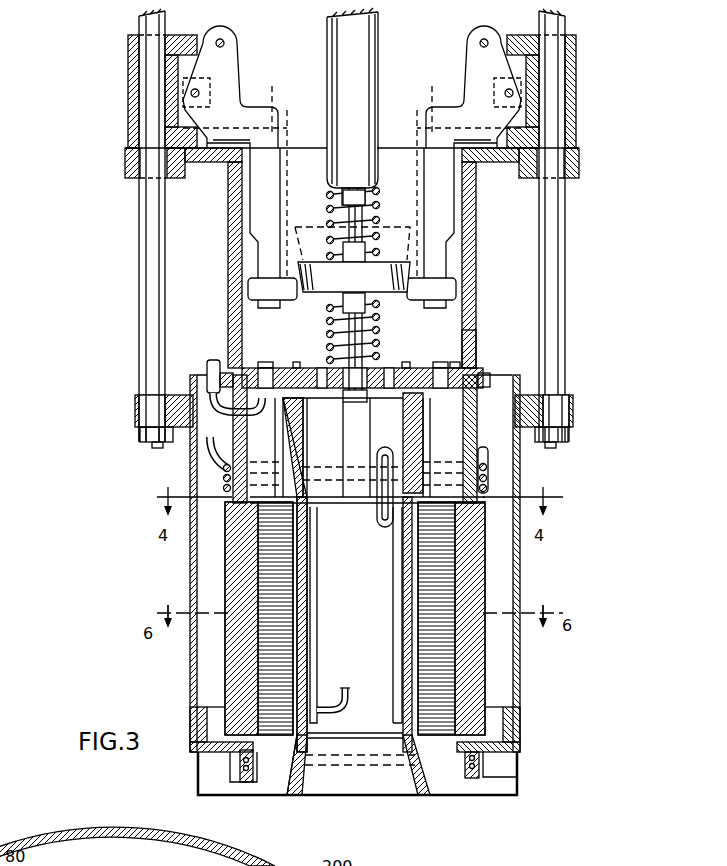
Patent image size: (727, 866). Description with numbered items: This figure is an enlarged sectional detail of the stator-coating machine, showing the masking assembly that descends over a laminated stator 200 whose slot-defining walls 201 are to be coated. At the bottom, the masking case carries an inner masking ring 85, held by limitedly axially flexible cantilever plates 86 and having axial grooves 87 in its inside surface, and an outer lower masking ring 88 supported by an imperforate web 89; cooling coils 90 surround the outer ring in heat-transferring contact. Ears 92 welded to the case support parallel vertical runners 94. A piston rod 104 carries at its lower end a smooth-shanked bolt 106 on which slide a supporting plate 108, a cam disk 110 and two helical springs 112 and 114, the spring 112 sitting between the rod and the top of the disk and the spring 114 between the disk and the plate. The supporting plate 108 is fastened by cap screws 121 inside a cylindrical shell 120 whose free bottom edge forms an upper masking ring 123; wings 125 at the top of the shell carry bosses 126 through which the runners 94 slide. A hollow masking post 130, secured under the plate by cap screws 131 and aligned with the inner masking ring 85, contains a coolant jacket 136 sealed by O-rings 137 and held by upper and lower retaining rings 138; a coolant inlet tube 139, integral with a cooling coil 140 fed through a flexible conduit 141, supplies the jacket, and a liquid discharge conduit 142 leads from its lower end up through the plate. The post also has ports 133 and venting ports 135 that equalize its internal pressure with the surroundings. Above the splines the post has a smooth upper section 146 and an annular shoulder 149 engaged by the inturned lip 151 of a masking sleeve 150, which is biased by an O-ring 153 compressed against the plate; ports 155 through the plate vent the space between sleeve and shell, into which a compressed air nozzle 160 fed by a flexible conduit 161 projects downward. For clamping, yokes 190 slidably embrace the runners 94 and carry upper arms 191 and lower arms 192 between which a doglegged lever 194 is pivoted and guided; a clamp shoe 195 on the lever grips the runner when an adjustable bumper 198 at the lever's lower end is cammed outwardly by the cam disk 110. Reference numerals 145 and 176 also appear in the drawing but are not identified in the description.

The inner masking ring 85 is at (432, 772).
The cantilever plates 86 is at (480, 790).
The axial grooves 87 is at (400, 796).
The outer lower masking ring 88 is at (467, 773).
The imperforate web 89 is at (213, 753).
The cooling coils 90 is at (479, 765).
The ears 92 is at (135, 412).
The runners 94 is at (140, 302).
The piston rod 104 is at (378, 20).
The smooth-shanked bolt 106 is at (379, 206).
The supporting plate 108 is at (407, 367).
The cam disk 110 is at (327, 292).
The helical spring 112 is at (380, 192).
The helical spring 114 is at (297, 368).
The cylindrical shell 120 is at (477, 262).
The cap screws 121 is at (484, 374).
The upper masking ring 123 is at (195, 552).
The wings 125 is at (203, 163).
The bosses 126 is at (125, 167).
The masking post 130 is at (405, 752).
The cap screws 131 is at (468, 337).
The ports 133 is at (323, 374).
The venting ports 135 is at (333, 436).
The coolant jacket 136 is at (395, 522).
The O-rings 137 is at (310, 508).
The retaining rings 138 is at (368, 522).
The coolant inlet tube 139 is at (383, 560).
The cooling coil 140 is at (488, 478).
The flexible conduit 141 is at (213, 460).
The liquid discharge conduit 142 is at (337, 686).
The flare 145 is at (283, 750).
The smooth surfaced upper section 146 is at (434, 443).
The external annular shoulder 149 is at (305, 424).
The masking sleeve 150 is at (424, 417).
The inturned lip 151 is at (375, 407).
The O-ring 153 is at (273, 398).
The ports 155 is at (262, 367).
The compressed air nozzle 160 is at (233, 425).
The flexible conduit 161 is at (214, 362).
The tube wall 176 is at (413, 441).
The yokes 190 is at (128, 56).
The upper arms 191 is at (205, 35).
The lower arms 192 is at (352, 184).
The doglegged lever 194 is at (227, 62).
The clamp shoe 195 is at (170, 95).
The adjustable bumper 198 is at (250, 289).
The laminated stator 200 is at (222, 667).
The slot-defining walls 201 is at (447, 643).